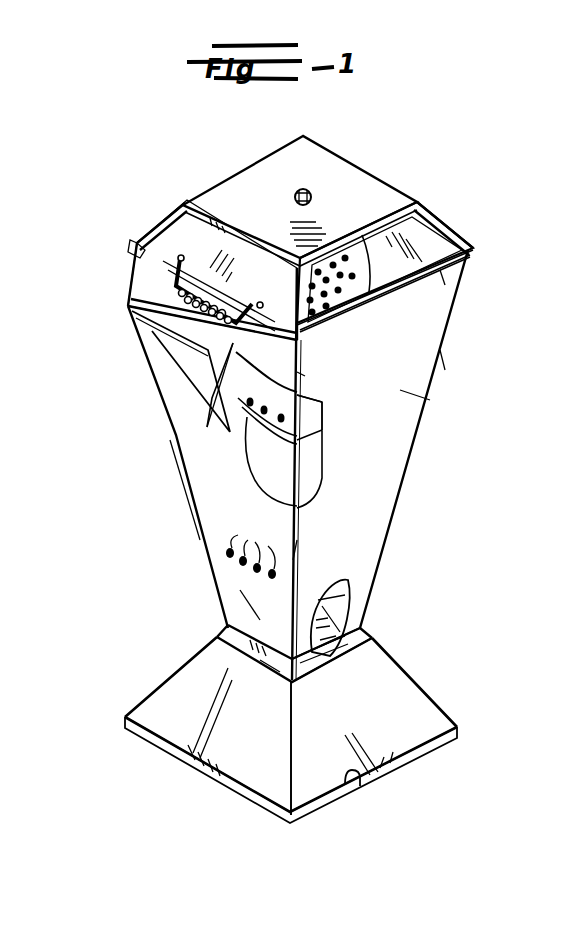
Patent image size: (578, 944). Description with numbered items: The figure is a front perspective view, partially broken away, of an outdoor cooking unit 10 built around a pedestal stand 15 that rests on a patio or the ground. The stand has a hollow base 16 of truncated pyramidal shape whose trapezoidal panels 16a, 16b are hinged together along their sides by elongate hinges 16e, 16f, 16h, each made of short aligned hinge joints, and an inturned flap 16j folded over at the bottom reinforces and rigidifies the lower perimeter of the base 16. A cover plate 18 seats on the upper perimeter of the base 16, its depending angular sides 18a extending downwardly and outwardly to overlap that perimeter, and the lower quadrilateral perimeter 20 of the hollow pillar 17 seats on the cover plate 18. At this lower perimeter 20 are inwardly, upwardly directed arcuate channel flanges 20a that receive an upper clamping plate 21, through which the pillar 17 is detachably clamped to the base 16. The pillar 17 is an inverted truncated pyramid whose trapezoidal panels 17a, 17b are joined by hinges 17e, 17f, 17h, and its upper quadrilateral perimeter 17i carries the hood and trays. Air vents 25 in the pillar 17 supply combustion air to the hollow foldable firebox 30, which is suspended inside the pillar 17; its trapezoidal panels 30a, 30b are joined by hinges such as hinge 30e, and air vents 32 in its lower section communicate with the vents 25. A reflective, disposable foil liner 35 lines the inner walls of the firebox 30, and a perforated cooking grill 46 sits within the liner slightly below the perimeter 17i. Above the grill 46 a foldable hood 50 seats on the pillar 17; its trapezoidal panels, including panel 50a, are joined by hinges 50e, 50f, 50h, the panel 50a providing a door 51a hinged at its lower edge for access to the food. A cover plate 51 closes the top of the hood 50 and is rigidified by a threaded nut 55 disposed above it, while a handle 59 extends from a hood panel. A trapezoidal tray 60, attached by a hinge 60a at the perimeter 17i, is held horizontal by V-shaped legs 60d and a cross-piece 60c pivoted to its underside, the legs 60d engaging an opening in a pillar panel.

The outdoor cooking unit 10 is at (150, 152).
The pedestal stand 15 is at (162, 530).
The hollow base 16 is at (167, 778).
The base panel 16a is at (408, 746).
The base panel 16b is at (241, 790).
The base hinge 16e is at (290, 806).
The base hinge 16f is at (178, 672).
The base hinge 16h is at (432, 702).
The inturned flap 16j is at (355, 796).
The hollow pillar 17 is at (212, 556).
The pillar panel 17a is at (408, 399).
The pillar panel 17b is at (234, 598).
The pillar hinge 17e is at (300, 548).
The pillar hinge 17f is at (190, 486).
The pillar hinge 17h is at (441, 362).
The upper quadrilateral perimeter of pillar 17i is at (438, 275).
The cover plate 18 is at (380, 634).
The depending angular sides 18a is at (272, 670).
The lower quadrilateral perimeter of pillar 20 is at (362, 645).
The arcuate channel flanges 20a is at (330, 660).
The upper clamping plate 21 is at (334, 611).
The air vents 25 is at (251, 543).
The firebox 30 is at (318, 449).
The firebox panel 30a is at (323, 403).
The firebox panel 30b is at (243, 414).
The firebox hinge 30e is at (325, 418).
The firebox air vents 32 is at (256, 438).
The foil liner 35 is at (305, 372).
The cooking grill 46 is at (330, 247).
The hood 50 is at (368, 150).
The hood panel 50a is at (443, 234).
The hood hinge 50e is at (330, 328).
The hood hinge 50f is at (170, 218).
The hood hinge 50h is at (442, 232).
The cover plate 51 is at (382, 170).
The door 51a is at (215, 216).
The threaded nut 55 is at (302, 188).
The handle 59 is at (176, 289).
The tray 60 is at (168, 284).
The tray hinge 60a is at (152, 233).
The cross-piece 60c is at (202, 378).
The legs 60d is at (166, 362).